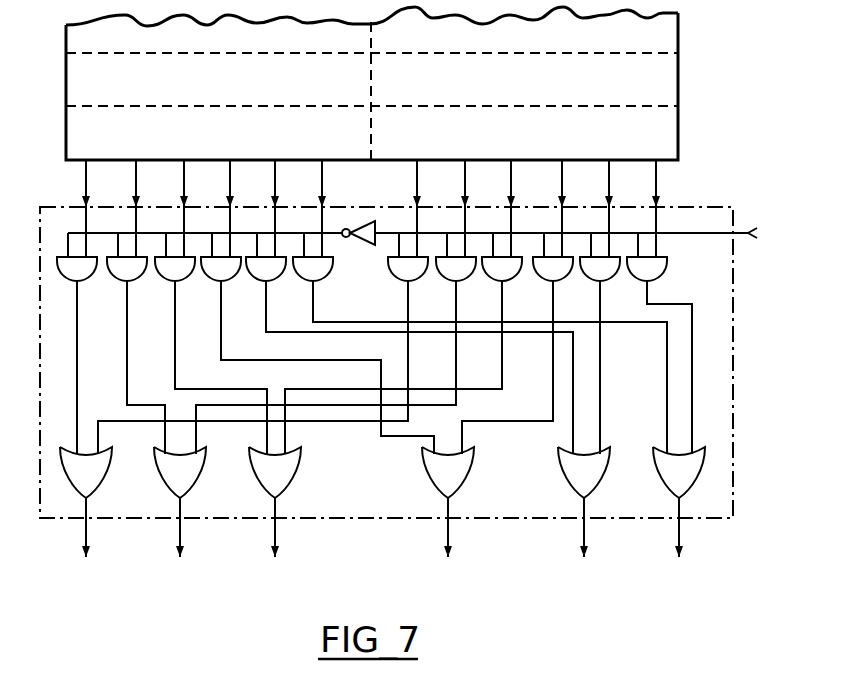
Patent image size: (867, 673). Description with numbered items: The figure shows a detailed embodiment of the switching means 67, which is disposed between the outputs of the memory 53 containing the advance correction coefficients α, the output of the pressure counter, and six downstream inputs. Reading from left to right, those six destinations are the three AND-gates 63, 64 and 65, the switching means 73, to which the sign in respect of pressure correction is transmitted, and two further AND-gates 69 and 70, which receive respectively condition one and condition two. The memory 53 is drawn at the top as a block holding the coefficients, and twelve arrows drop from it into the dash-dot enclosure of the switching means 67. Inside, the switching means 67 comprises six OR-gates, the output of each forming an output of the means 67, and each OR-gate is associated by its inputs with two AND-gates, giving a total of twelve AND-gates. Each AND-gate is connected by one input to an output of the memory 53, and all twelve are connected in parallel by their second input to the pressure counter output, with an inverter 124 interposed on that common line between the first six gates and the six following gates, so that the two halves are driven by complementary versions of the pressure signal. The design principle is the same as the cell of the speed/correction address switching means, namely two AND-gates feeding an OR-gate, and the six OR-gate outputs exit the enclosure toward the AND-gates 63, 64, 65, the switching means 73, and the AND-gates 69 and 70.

The memory 53 is at (665, 82).
The switching means 67 is at (413, 339).
The inverter 124 is at (362, 246).
The AND-gate 63 is at (86, 519).
The AND-gate 64 is at (180, 519).
The AND-gate 65 is at (275, 519).
The switching means 73 is at (448, 519).
The AND-gate 69 is at (584, 519).
The AND-gate 70 is at (679, 519).